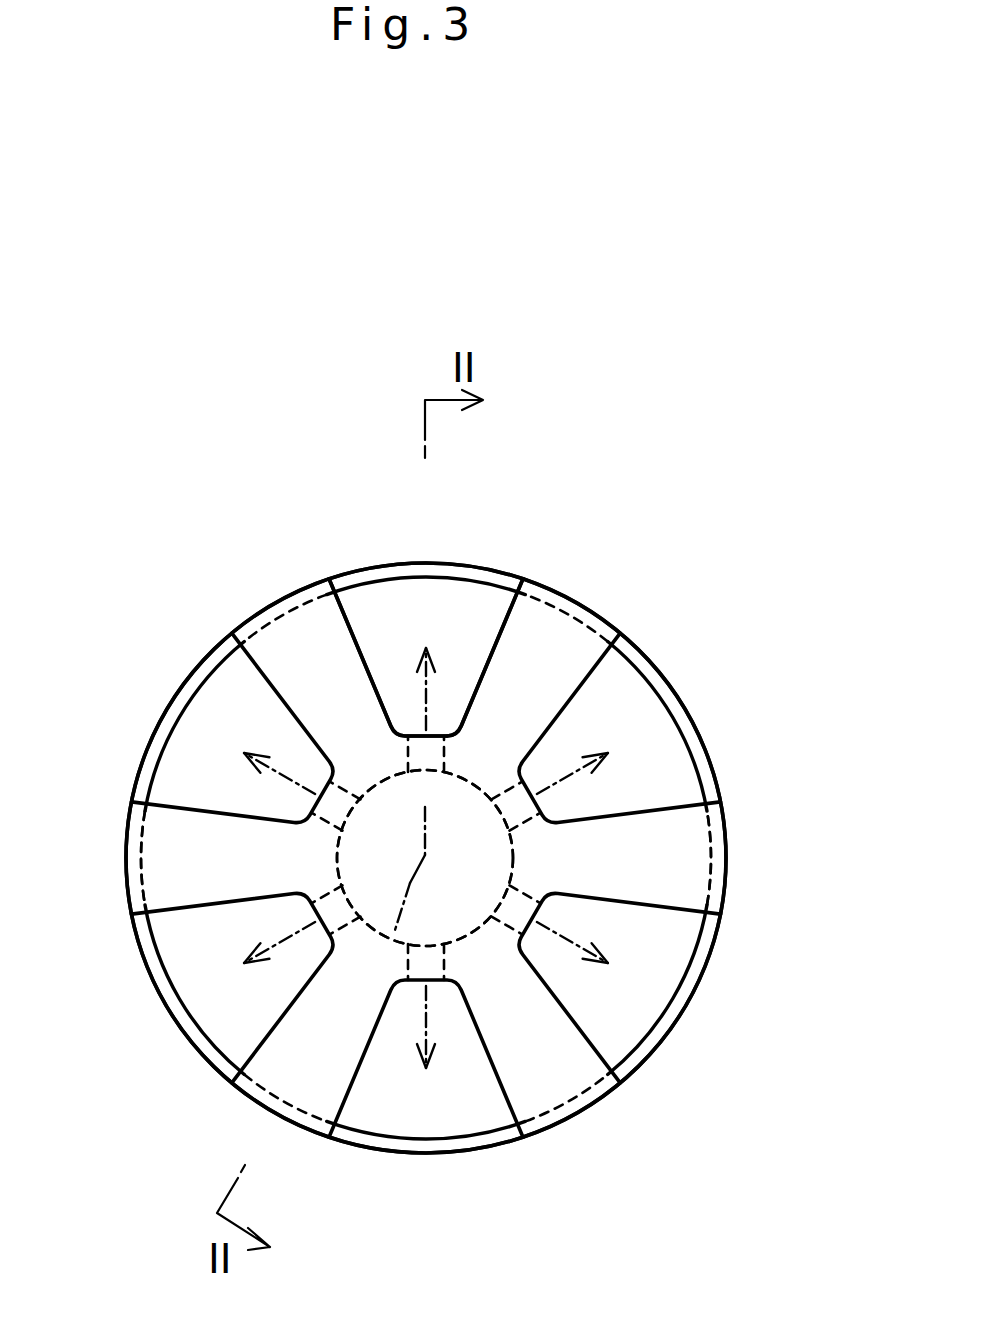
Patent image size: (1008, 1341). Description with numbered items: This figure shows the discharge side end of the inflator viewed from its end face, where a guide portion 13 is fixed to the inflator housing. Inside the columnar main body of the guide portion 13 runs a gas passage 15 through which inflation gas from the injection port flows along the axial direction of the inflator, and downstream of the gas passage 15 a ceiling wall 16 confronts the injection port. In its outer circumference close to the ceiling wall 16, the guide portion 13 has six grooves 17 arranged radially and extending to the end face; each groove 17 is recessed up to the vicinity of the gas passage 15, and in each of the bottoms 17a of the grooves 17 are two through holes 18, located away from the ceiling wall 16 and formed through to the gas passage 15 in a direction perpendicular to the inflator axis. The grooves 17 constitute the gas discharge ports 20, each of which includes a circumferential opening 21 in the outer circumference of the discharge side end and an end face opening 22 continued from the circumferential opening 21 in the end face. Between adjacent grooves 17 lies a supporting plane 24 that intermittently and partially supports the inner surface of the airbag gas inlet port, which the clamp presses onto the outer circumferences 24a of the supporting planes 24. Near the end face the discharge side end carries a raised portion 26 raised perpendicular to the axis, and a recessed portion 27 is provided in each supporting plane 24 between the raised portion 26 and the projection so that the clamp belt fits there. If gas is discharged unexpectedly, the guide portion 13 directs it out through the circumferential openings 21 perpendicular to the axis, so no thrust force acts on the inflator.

The guide portion 13 is at (142, 645).
The gas passage 15 is at (440, 880).
The ceiling wall 16 is at (410, 773).
The grooves 17 is at (372, 607).
The bottoms of the grooves 17a is at (410, 733).
The through holes 18 is at (425, 858).
The gas discharge ports 20 is at (700, 473).
The circumferential opening 21 is at (483, 603).
The end face opening 22 is at (475, 657).
The supporting plane 24 is at (293, 630).
The outer circumferences of the supporting planes 24a is at (260, 627).
The raised portion 26 is at (307, 610).
The recessed portion 27 is at (197, 667).